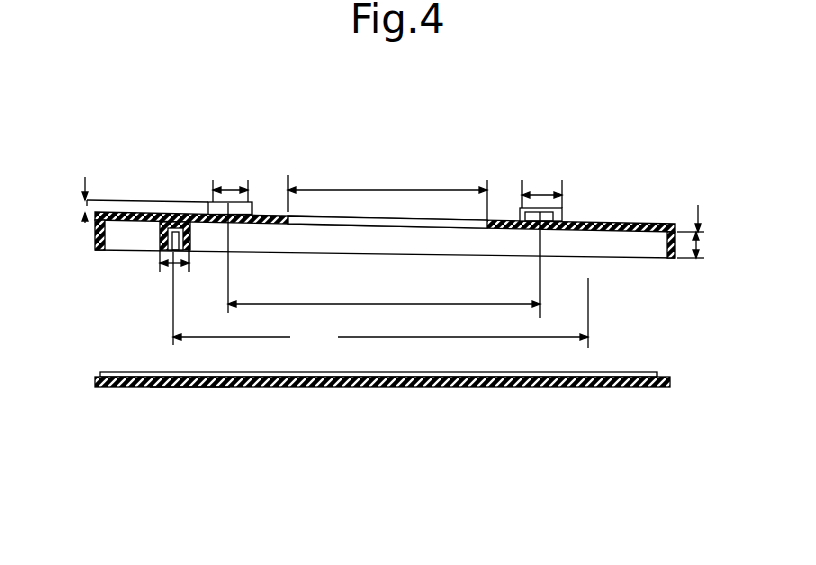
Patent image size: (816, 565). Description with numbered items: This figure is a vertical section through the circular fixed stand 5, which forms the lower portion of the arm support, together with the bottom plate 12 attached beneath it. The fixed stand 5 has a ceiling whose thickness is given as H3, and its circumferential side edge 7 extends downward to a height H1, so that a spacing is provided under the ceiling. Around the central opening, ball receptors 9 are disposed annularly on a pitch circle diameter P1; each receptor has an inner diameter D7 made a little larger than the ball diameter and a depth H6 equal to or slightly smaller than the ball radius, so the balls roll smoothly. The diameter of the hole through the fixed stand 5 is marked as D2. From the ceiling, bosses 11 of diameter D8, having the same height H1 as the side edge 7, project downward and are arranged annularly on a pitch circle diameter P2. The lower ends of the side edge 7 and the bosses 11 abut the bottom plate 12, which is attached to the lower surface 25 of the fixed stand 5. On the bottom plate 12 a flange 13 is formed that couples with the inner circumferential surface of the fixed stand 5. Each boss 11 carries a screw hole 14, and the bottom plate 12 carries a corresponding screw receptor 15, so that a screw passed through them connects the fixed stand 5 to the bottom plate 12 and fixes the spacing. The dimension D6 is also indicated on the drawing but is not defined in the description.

The fixed stand 5 is at (626, 218).
The circumferential side edge 7 is at (98, 230).
The ball receptor 9 is at (352, 222).
The boss 11 is at (190, 240).
The bottom plate 12 is at (440, 388).
The flange 13 is at (253, 207).
The screw hole 14 is at (176, 252).
The screw receptor 15 is at (186, 388).
The lower surface 25 is at (598, 233).
The height H1 is at (700, 260).
The ceiling portion thickness H3 is at (680, 226).
The depth H6 is at (84, 212).
The hole diameter D2 is at (387, 187).
The width D6 is at (542, 192).
The inner diameter D7 is at (233, 185).
The boss portion diameter D8 is at (153, 268).
The pitch circle diameter P1 is at (384, 271).
The pitch circle diameter P2 is at (380, 304).